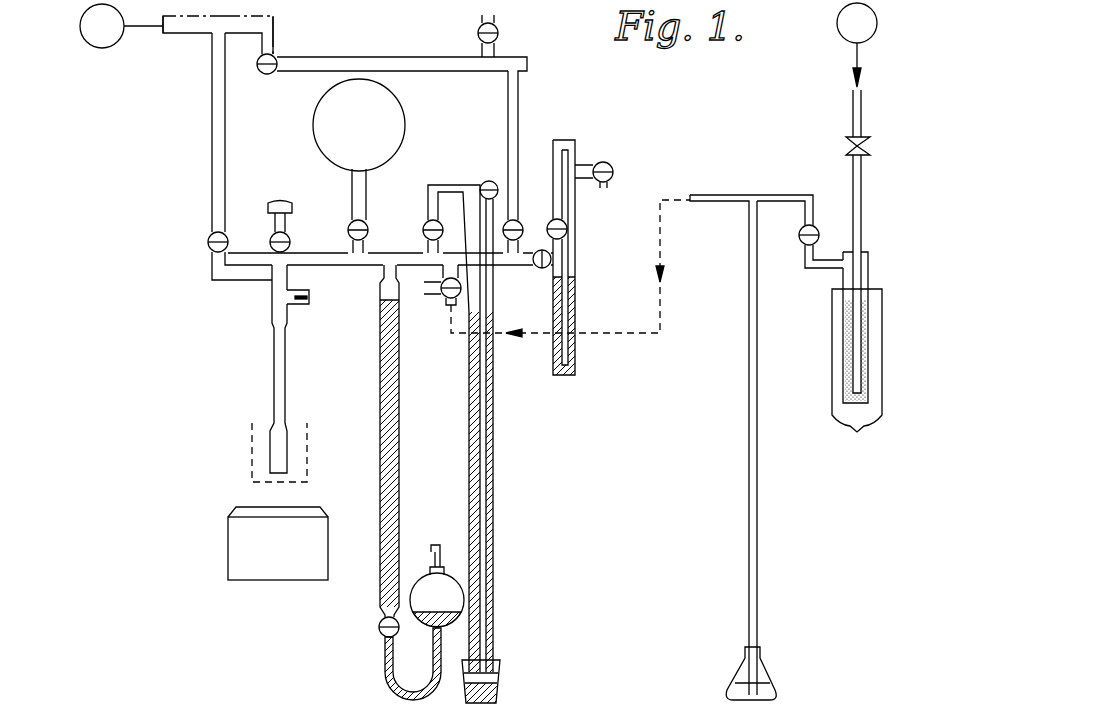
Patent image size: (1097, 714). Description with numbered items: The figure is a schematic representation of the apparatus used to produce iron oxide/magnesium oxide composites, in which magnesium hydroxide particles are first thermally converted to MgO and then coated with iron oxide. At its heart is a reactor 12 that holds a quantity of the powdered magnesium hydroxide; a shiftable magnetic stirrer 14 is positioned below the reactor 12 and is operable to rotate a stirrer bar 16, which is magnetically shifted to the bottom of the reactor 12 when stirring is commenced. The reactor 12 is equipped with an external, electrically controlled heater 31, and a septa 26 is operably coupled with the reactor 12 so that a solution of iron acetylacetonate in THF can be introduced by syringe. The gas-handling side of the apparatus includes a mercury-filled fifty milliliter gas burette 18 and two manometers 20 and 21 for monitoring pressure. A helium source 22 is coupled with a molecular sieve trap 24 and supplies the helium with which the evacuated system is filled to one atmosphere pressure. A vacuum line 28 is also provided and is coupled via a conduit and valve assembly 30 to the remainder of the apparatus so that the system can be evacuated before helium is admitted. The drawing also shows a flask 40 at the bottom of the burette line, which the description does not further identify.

The reactor 12 is at (280, 405).
The shiftable magnetic stirrer 14 is at (311, 570).
The stirrer bar 16 is at (300, 304).
The mercury-filled gas burette 18 is at (399, 459).
The manometer 20 is at (512, 567).
The manometer 21 is at (580, 301).
The helium source 22 is at (872, 33).
The molecular sieve 13X trap 24 is at (878, 343).
The septa 26 is at (284, 200).
The vacuum line 28 is at (188, 33).
The conduit and valve assembly 30 is at (629, 220).
The external electrically controlled heater 31 is at (250, 447).
The collection flask 40 is at (398, 629).